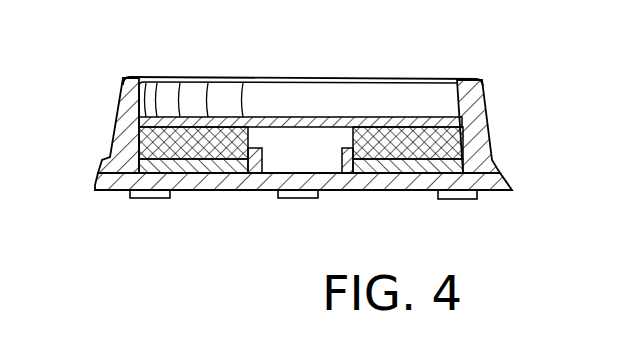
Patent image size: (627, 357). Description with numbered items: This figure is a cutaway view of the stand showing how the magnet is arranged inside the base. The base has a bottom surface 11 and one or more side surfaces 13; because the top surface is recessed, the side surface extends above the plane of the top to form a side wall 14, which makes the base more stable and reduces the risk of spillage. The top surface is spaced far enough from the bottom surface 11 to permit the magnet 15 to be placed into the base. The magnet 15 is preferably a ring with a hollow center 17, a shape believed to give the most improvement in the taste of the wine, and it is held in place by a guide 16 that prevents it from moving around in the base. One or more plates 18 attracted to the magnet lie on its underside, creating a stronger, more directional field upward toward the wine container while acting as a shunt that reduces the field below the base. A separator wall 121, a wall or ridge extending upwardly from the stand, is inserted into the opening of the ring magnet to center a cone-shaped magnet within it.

The bottom surface 11 is at (187, 190).
The side surface 13 is at (118, 127).
The side wall 14 is at (456, 80).
The magnet 15 is at (493, 131).
The guide 16 is at (263, 152).
The hollow center 17 is at (318, 144).
The plate 18 is at (505, 177).
The separator wall 121 is at (349, 148).